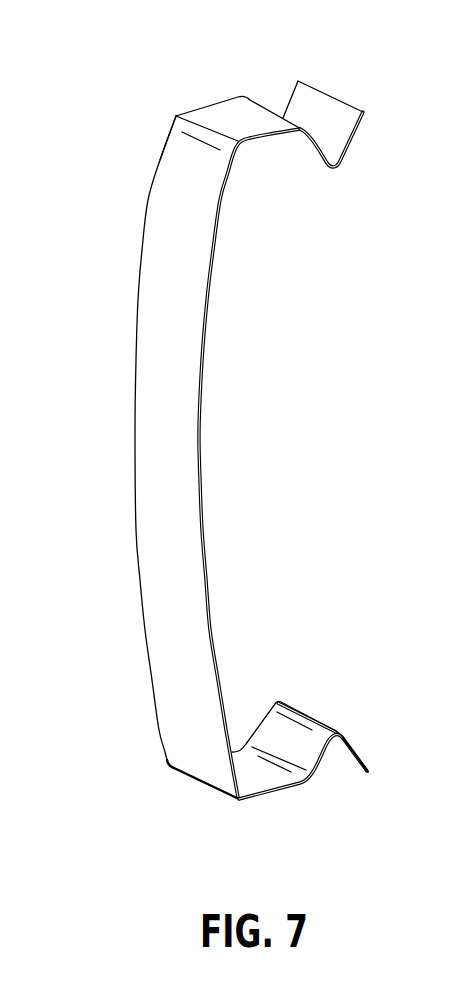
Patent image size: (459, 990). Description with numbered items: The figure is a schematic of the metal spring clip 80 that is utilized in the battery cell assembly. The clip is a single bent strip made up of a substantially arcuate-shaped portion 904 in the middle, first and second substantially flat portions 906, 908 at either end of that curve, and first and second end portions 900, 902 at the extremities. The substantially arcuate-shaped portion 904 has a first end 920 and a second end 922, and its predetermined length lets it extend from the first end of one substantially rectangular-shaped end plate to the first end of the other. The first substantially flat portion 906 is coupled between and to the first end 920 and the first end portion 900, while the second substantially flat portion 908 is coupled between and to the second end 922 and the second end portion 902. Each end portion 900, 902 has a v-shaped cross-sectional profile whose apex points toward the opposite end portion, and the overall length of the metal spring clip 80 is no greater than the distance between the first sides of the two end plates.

The metal spring clip 80 is at (227, 444).
The first end portion 900 is at (300, 97).
The second end portion 902 is at (343, 776).
The substantially arcuate-shaped portion 904 is at (136, 438).
The first substantially flat portion 906 is at (220, 112).
The second substantially flat portion 908 is at (279, 793).
The first end 920 is at (176, 115).
The second end 922 is at (243, 800).